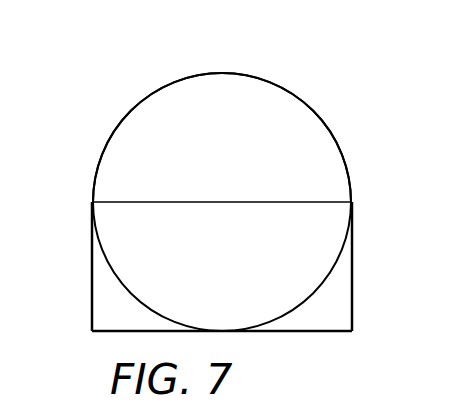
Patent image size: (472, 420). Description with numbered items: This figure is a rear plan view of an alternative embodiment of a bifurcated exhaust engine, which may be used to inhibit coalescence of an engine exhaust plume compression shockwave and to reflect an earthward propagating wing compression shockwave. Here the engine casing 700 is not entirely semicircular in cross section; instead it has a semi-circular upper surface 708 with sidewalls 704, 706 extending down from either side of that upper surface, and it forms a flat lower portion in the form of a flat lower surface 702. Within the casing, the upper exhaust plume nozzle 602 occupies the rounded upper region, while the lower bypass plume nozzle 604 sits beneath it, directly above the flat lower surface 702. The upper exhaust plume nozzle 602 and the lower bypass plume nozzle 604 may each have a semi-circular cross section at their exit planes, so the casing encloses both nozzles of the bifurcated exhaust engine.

The engine casing 700 is at (157, 79).
The semi-circular upper surface 708 is at (252, 73).
The upper exhaust plume nozzle 602 is at (330, 149).
The lower bypass plume nozzle 604 is at (335, 222).
The sidewall 706 is at (92, 273).
The sidewall 704 is at (352, 300).
The flat lower surface 702 is at (308, 332).